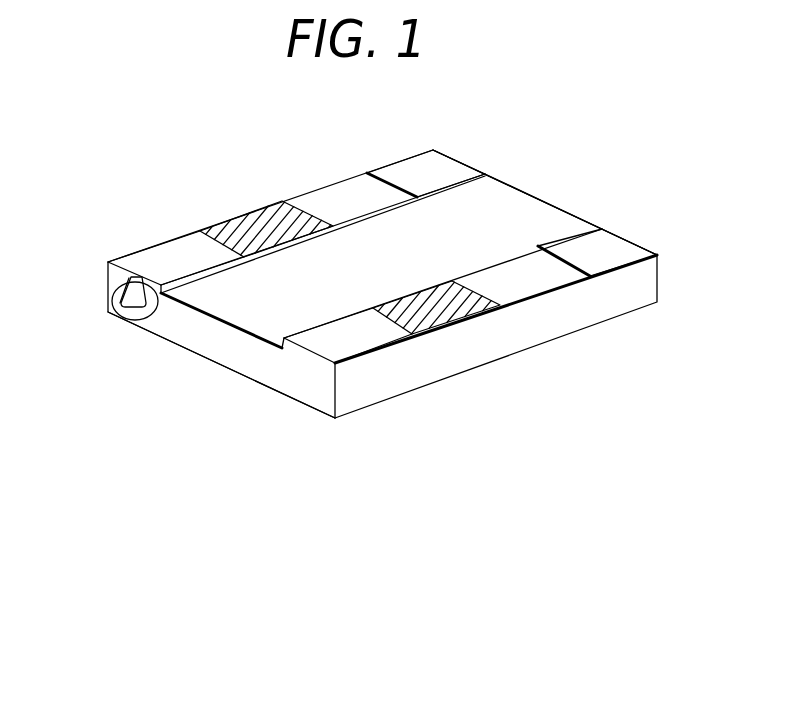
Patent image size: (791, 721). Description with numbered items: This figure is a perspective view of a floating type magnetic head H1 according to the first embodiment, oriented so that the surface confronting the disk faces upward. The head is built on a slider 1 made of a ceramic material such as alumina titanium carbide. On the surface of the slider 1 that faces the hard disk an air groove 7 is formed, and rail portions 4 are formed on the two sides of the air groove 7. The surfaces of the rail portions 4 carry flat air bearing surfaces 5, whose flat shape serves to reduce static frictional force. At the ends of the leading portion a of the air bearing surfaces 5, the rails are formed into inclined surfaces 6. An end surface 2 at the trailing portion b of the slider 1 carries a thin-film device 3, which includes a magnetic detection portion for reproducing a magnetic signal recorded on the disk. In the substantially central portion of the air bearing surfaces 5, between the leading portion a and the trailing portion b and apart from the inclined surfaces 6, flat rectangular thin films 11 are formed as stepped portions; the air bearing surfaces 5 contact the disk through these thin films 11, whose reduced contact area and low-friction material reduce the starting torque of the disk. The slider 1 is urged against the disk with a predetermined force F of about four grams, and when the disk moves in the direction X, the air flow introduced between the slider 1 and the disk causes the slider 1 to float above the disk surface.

The slider 1 is at (197, 362).
The end surface 2 is at (177, 330).
The thin-film device 3 is at (127, 312).
The rail portion 4 is at (310, 181).
The air bearing surface 5 is at (170, 248).
The inclined surface 6 is at (447, 165).
The air groove 7 is at (565, 223).
The thin film 11 is at (257, 215).
The leading portion a is at (517, 185).
The trailing portion b is at (248, 350).
The force F is at (393, 415).
The floating type magnetic head H1 is at (377, 157).
The direction of disk movement X is at (614, 170).